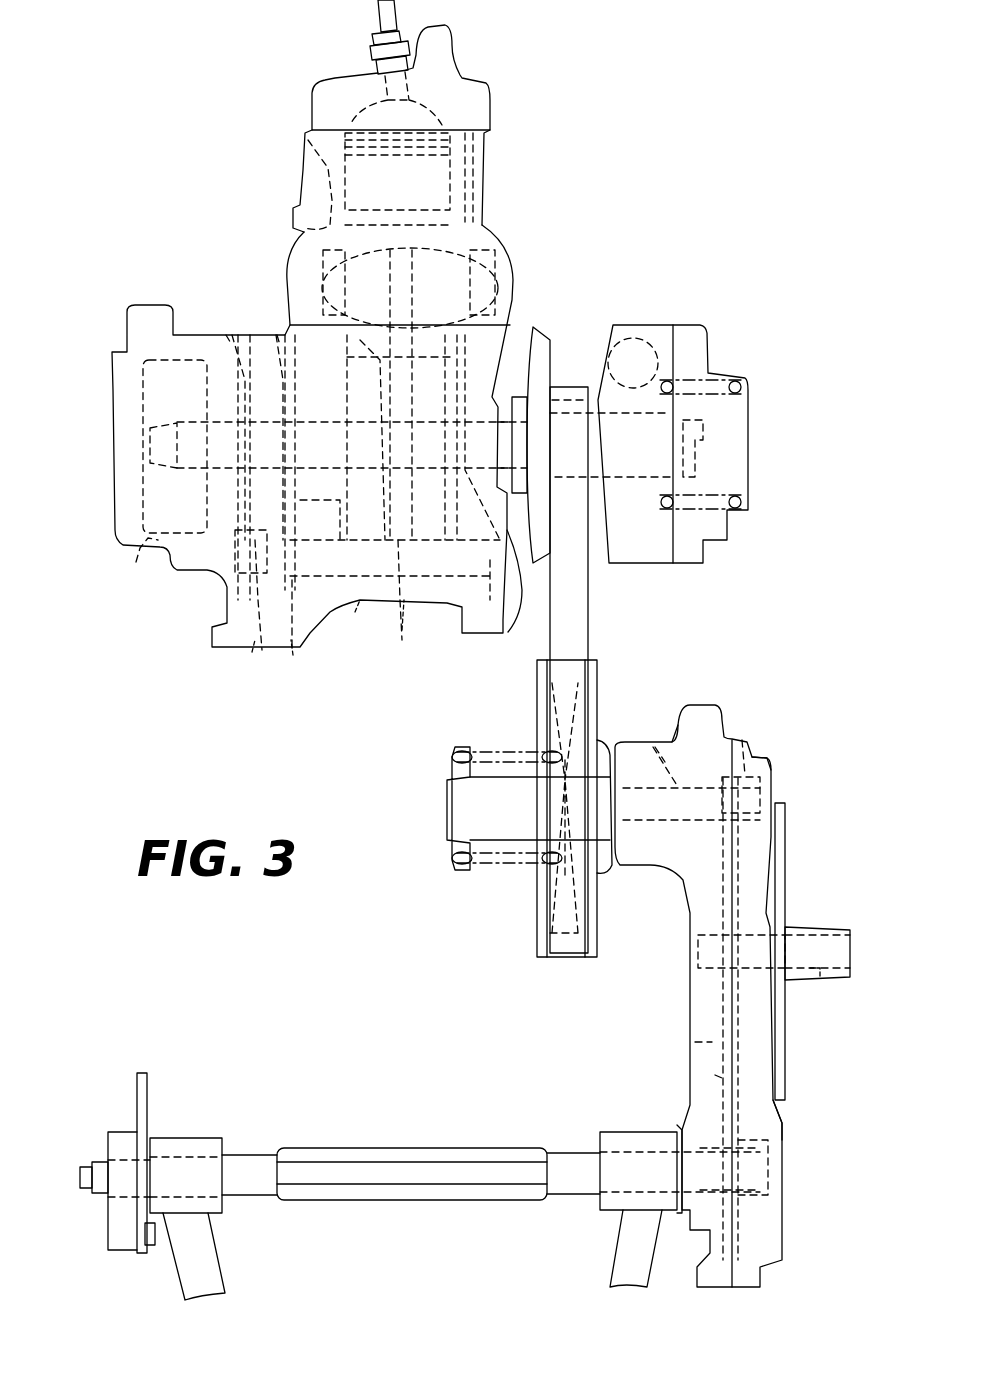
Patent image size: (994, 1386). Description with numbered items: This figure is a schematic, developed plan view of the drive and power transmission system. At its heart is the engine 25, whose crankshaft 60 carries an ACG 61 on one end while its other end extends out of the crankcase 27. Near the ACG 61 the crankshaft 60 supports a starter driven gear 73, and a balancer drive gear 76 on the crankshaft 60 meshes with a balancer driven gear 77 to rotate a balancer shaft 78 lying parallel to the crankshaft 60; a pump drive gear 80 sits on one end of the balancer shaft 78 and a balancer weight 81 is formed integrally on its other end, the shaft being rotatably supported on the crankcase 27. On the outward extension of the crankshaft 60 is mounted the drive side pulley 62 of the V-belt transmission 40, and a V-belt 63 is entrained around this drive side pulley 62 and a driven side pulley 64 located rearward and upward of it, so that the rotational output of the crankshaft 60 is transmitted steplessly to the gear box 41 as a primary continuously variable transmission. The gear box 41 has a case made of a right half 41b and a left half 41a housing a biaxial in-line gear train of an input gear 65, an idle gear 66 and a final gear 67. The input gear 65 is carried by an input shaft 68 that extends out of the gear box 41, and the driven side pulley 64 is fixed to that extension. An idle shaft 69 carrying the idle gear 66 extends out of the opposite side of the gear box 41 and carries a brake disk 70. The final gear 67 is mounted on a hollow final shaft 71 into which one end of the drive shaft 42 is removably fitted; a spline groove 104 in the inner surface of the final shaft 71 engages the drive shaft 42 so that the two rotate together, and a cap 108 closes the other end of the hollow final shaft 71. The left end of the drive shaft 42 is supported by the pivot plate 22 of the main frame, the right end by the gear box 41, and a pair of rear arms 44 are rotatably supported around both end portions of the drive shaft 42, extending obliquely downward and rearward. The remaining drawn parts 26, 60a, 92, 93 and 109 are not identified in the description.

The engine 25 is at (238, 182).
The cylinder head 26 is at (310, 133).
The crankcase 27 is at (253, 337).
The starter driven gear 73 is at (226, 335).
The balancer drive gear 76 is at (277, 335).
The drive side pulley 62 is at (546, 343).
The V-belt transmission 40 is at (640, 286).
The crankshaft 60 is at (320, 520).
The ACG 61 is at (136, 562).
The V-belt 63 is at (587, 590).
The crankshaft end 60a is at (351, 625).
The balancer shaft 78 is at (402, 630).
The balancer weight 81 is at (512, 620).
The pump drive gear 80 is at (252, 652).
The balancer driven gear 77 is at (293, 655).
The left half 41a is at (672, 740).
The input shaft 68 is at (655, 747).
The input gear 65 is at (750, 740).
The right half 41b is at (765, 760).
The brake disk 70 is at (790, 870).
The bracket 93 is at (815, 925).
The driven side pulley 64 is at (535, 930).
The idle shaft 69 is at (697, 957).
The gear box 41 is at (652, 1002).
The mount 92 is at (825, 990).
The idle gear 66 is at (695, 1042).
The final gear 67 is at (715, 1075).
The pivot plate 22 is at (137, 1102).
The spline groove 104 is at (190, 1138).
The drive shaft 42 is at (352, 1146).
The splined shaft 109 is at (420, 1170).
The cap 108 is at (92, 1165).
The rear arms 44 is at (210, 1250).
The final shaft 71 is at (782, 1130).